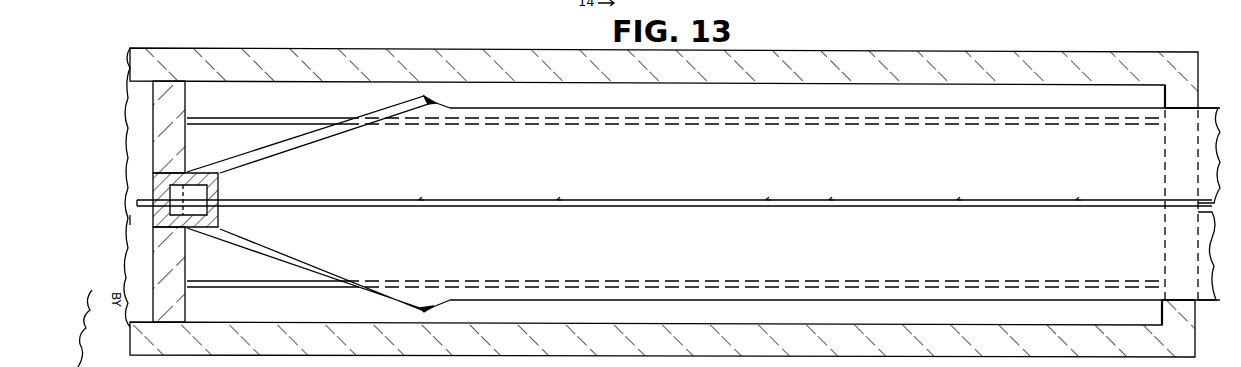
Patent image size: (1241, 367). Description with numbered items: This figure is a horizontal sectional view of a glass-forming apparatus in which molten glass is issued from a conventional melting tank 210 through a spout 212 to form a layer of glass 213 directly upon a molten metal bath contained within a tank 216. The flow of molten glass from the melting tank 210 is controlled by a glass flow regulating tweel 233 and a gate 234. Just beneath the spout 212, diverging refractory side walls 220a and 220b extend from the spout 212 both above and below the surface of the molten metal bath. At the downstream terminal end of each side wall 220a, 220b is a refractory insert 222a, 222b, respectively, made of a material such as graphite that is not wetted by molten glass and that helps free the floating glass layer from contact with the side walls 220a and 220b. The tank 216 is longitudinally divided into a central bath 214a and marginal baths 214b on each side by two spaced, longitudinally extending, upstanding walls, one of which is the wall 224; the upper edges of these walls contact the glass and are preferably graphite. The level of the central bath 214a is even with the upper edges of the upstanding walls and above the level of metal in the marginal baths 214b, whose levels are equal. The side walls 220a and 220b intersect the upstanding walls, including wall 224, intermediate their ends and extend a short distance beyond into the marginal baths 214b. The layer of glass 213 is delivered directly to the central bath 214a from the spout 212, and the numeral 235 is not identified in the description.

The melting tank 210 is at (124, 77).
The spout 212 is at (127, 225).
The layer of glass 213 is at (507, 184).
The central bath 214a is at (703, 269).
The marginal baths 214b is at (760, 111).
The tank 216 is at (324, 48).
The diverging refractory side wall 220a is at (326, 137).
The diverging refractory side wall 220b is at (315, 268).
The refractory insert 222a is at (429, 98).
The refractory insert 222b is at (429, 314).
The upstanding wall 224 is at (755, 124).
The glass flow regulating tweel 233 is at (158, 197).
The gate 234 is at (222, 198).
The lower electrode boundary 235 is at (772, 283).